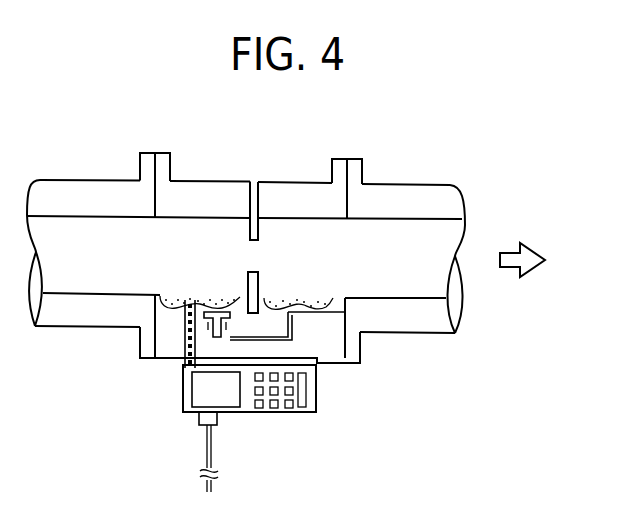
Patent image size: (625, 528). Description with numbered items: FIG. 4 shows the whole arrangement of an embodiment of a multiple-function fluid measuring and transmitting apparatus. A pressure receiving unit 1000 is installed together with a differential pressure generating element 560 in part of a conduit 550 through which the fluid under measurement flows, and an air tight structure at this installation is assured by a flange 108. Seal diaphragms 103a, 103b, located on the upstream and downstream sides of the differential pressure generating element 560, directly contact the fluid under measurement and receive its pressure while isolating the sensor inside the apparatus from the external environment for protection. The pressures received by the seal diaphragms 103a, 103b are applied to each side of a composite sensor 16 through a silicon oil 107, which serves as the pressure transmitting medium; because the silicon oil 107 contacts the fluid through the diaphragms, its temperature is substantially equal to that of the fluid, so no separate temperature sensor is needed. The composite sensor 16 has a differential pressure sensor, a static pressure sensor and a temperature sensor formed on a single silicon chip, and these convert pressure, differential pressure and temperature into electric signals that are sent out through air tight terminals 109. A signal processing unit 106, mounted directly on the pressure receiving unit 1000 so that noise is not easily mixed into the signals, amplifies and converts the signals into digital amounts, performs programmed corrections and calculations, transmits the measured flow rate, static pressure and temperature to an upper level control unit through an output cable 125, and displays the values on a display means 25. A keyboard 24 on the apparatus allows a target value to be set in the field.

The conduit 550 is at (92, 180).
The differential pressure generating element 560 is at (253, 181).
The seal diaphragm 103a is at (280, 297).
The seal diaphragm 103b is at (178, 297).
The silicon oil 107 is at (352, 298).
The flange 108 is at (140, 345).
The pressure receiving unit 1000 is at (342, 341).
The air tight terminals 109 is at (185, 368).
The composite sensor 16 is at (216, 297).
The display means 25 is at (198, 418).
The signal processing unit 106 is at (318, 398).
The keyboard 24 is at (270, 412).
The output cable 125 is at (206, 452).